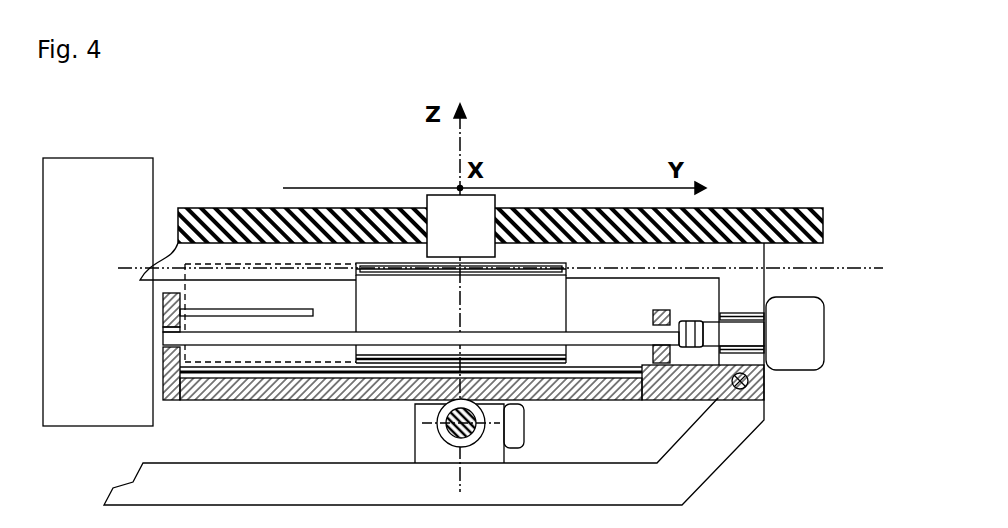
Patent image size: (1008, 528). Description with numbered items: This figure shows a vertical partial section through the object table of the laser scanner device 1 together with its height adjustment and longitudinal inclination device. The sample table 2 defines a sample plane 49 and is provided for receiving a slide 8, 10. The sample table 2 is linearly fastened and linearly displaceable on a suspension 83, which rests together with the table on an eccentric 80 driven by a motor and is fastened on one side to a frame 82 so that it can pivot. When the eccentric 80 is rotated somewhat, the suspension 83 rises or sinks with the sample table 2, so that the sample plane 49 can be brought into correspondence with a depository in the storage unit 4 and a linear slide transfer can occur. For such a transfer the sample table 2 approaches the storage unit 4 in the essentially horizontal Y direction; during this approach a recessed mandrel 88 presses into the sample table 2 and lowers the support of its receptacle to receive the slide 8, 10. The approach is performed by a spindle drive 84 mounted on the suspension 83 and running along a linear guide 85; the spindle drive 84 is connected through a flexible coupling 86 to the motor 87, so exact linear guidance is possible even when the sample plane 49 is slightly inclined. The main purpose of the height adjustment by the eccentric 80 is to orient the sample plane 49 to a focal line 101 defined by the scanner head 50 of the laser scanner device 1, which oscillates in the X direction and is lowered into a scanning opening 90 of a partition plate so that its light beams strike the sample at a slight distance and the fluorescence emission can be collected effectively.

The laser scanner device 1 is at (765, 175).
The sample table 2 is at (393, 312).
The storage unit 4 is at (121, 339).
The slide 8 is at (421, 308).
The slide 10 is at (440, 272).
The sample plane 49 is at (122, 268).
The scanner head 50 is at (480, 223).
The eccentric 80 is at (438, 427).
The frame 82 is at (753, 284).
The suspension 83 is at (267, 383).
The spindle drive 84 is at (641, 338).
The linear guide 85 is at (565, 398).
The flexible coupling 86 is at (694, 321).
The motor 87 is at (813, 339).
The recessed mandrel 88 is at (247, 313).
The scanning opening 90 is at (428, 266).
The focal line 101 is at (440, 272).